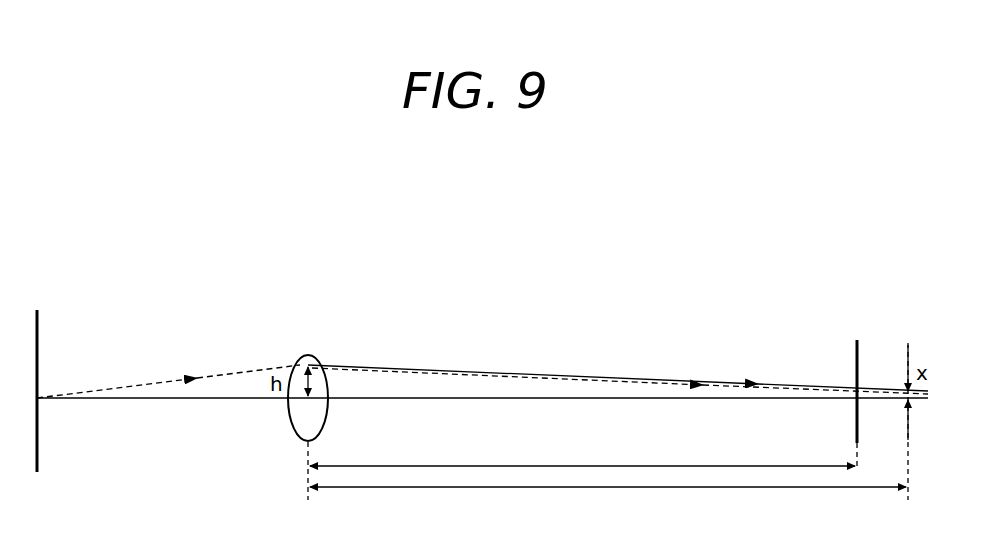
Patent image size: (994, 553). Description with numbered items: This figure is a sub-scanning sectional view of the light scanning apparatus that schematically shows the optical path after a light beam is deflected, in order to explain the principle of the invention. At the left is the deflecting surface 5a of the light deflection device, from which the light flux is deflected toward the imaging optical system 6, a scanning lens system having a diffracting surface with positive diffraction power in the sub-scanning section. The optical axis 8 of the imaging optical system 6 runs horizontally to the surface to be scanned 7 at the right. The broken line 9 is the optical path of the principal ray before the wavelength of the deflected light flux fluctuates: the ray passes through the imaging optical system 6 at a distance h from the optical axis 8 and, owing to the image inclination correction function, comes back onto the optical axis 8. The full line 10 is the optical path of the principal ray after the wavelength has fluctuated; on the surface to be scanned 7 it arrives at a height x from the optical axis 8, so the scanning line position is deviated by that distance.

The deflecting surface 5a is at (37, 342).
The imaging optical system 6 is at (312, 358).
The surface to be scanned 7 is at (857, 345).
The optical axis 8 is at (225, 398).
The optical path of the principal ray before wavelength fluctuation 9 is at (630, 392).
The optical path of the principal ray after wavelength fluctuation 10 is at (680, 377).